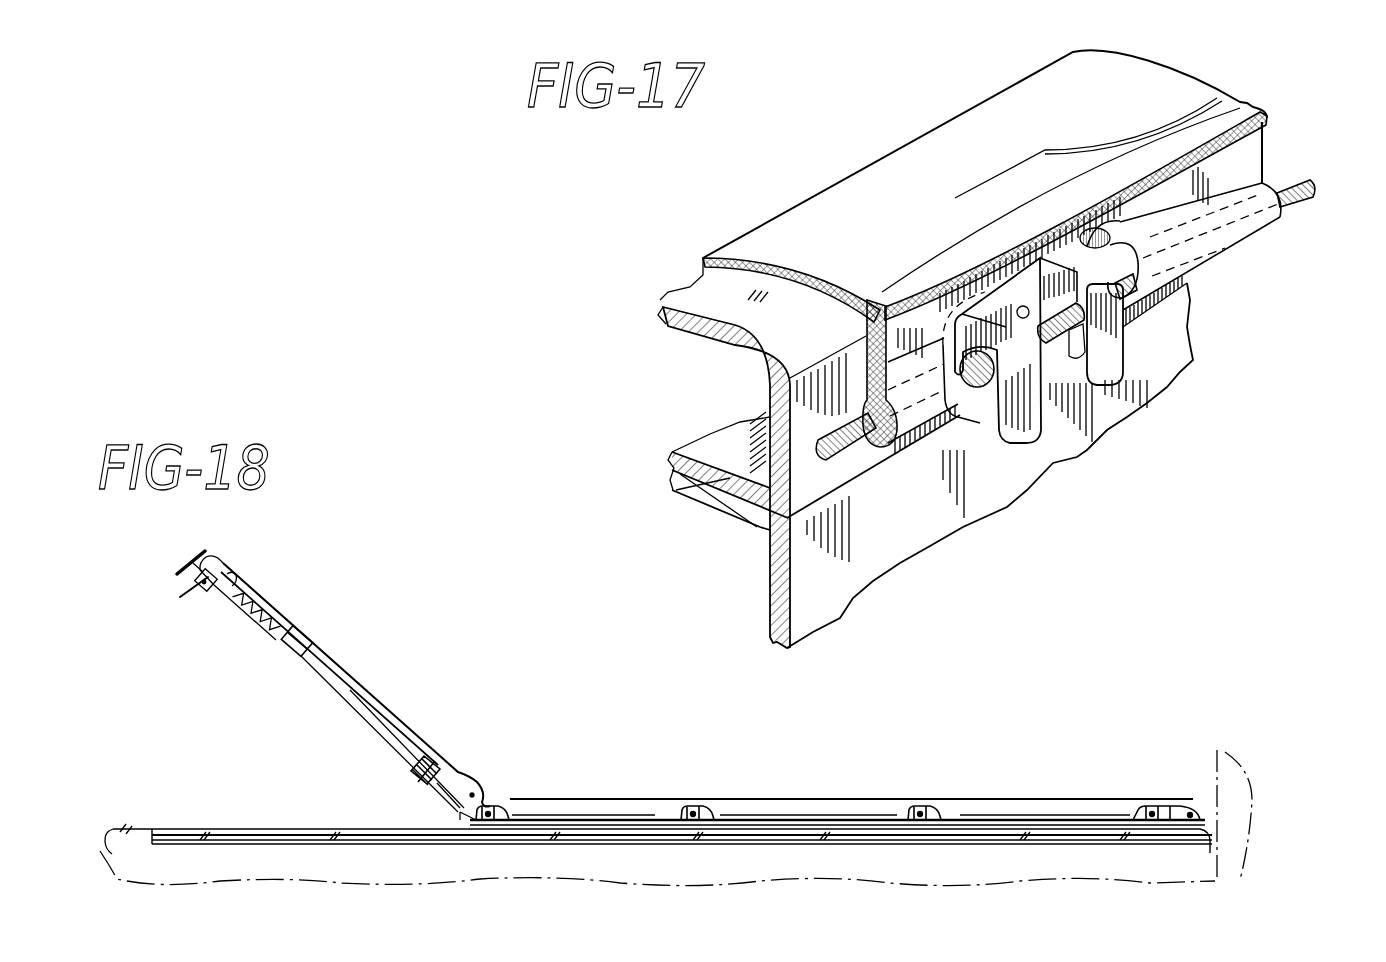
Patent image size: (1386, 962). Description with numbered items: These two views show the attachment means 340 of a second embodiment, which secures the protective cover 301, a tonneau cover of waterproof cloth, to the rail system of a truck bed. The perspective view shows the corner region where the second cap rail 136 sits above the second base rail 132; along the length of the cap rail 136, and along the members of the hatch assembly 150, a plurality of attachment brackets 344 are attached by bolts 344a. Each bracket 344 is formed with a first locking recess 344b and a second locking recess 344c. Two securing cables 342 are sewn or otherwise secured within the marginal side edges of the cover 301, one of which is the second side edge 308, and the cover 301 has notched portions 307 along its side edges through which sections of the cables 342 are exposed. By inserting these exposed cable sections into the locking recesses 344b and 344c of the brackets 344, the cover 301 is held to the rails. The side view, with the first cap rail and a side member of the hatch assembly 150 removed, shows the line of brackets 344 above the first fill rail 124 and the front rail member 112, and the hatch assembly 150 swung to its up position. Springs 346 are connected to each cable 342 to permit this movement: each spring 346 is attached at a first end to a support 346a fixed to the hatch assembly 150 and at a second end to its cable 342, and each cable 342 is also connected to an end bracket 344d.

In FIG. 17, the protective cover 301 is at (1016, 90).
In FIG. 18, the protective cover 301 is at (378, 700).
In FIG. 17, the second side edge 308 is at (1170, 84).
In FIG. 17, the notched portions 307 is at (1118, 232).
In FIG. 18, the notched portions 307 is at (717, 810).
In FIG. 17, the securing cables 342 is at (1308, 194).
In FIG. 18, the securing cables 342 is at (412, 772).
In FIG. 17, the second cap rail 136 is at (702, 342).
In FIG. 17, the second base rail 132 is at (722, 496).
In FIG. 17, the attachment means 340 is at (1105, 458).
In FIG. 18, the attachment means 340 is at (565, 744).
In FIG. 17, the attachment brackets 344 is at (1062, 350).
In FIG. 18, the attachment brackets 344 is at (443, 754).
In FIG. 17, the bolts 344a is at (1028, 318).
In FIG. 17, the first locking recess 344b is at (980, 413).
In FIG. 17, the second locking recess 344c is at (1127, 340).
In FIG. 18, the end bracket 344d is at (1152, 808).
In FIG. 18, the springs 346 is at (283, 612).
In FIG. 18, the support 346a is at (230, 572).
In FIG. 18, the hatch assembly 150 is at (333, 667).
In FIG. 18, the first fill rail 124 is at (237, 829).
In FIG. 18, the front rail member 112 is at (1180, 807).